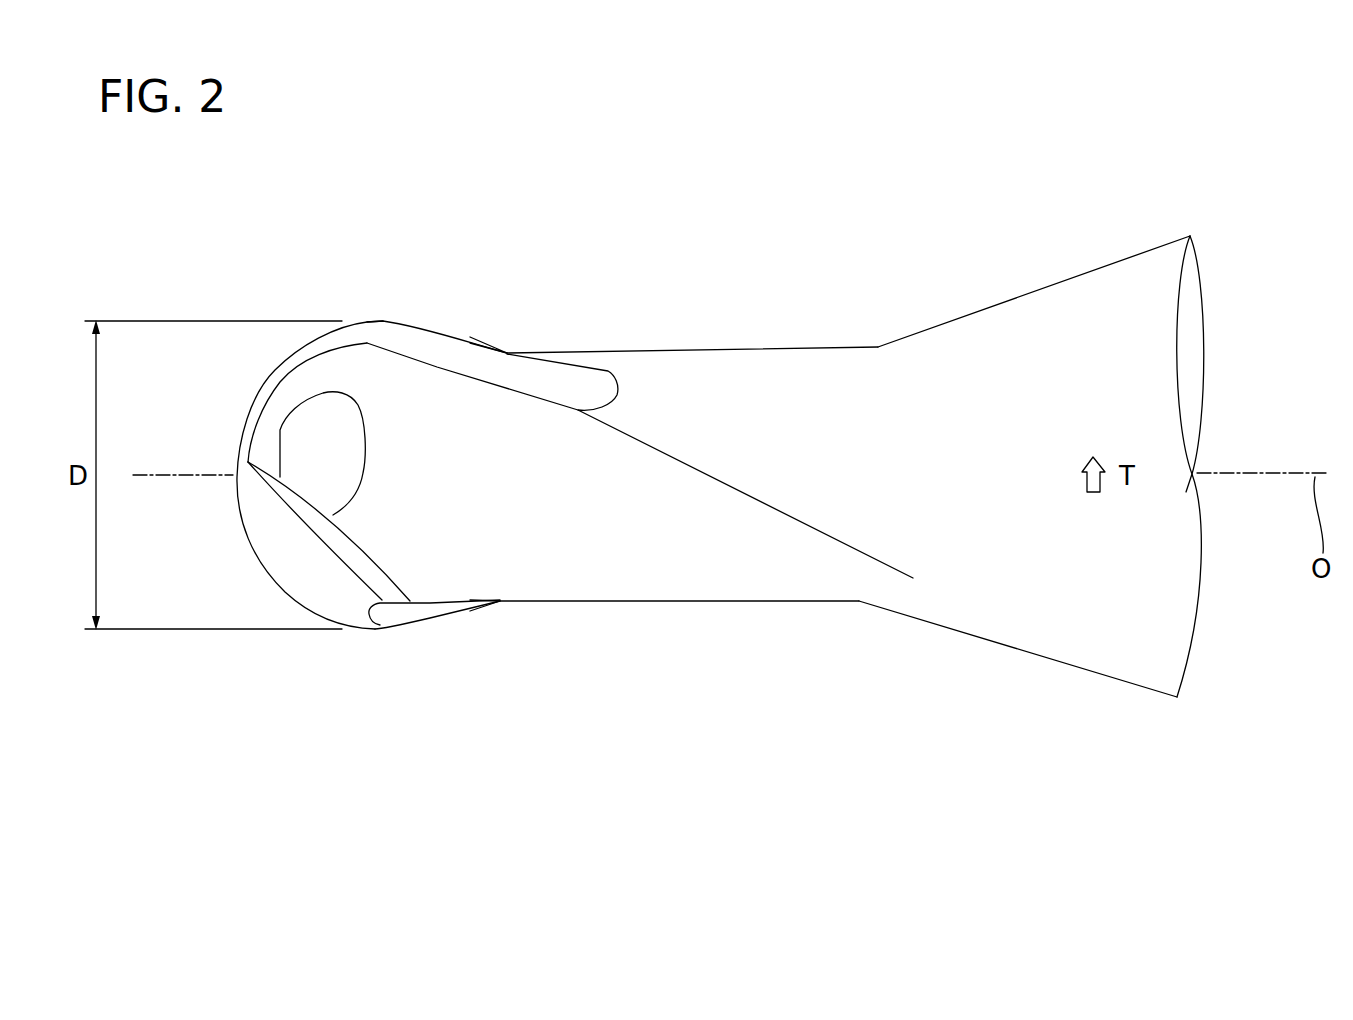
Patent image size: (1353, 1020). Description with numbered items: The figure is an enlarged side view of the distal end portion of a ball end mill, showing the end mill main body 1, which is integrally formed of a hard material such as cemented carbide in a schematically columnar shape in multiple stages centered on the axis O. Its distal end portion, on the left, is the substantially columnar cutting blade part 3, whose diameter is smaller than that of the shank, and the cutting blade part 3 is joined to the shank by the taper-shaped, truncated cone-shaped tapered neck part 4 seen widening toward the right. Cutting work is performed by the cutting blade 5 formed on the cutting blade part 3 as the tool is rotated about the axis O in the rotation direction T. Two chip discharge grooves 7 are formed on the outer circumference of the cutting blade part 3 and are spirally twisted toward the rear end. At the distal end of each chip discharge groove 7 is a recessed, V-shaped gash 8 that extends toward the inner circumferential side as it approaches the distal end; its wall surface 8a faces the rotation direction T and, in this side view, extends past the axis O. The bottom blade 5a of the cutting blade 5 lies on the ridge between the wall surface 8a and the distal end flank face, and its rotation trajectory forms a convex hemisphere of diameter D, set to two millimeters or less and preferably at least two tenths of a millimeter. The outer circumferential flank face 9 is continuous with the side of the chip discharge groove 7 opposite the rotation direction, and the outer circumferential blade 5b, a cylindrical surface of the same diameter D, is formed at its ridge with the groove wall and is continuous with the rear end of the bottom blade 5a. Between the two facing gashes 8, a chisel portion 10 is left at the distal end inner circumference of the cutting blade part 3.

The end mill main body 1 is at (950, 156).
The cutting blade part 3 is at (751, 280).
The tapered neck part 4 is at (959, 272).
The cutting blade 5 is at (410, 198).
The bottom blade 5a is at (279, 366).
The outer circumferential blade 5b is at (435, 333).
The chip discharge groove 7 is at (495, 329).
The gash 8 is at (287, 535).
The wall surface 8a is at (293, 557).
The outer circumferential flank face 9 is at (455, 352).
The chisel portion 10 is at (232, 462).